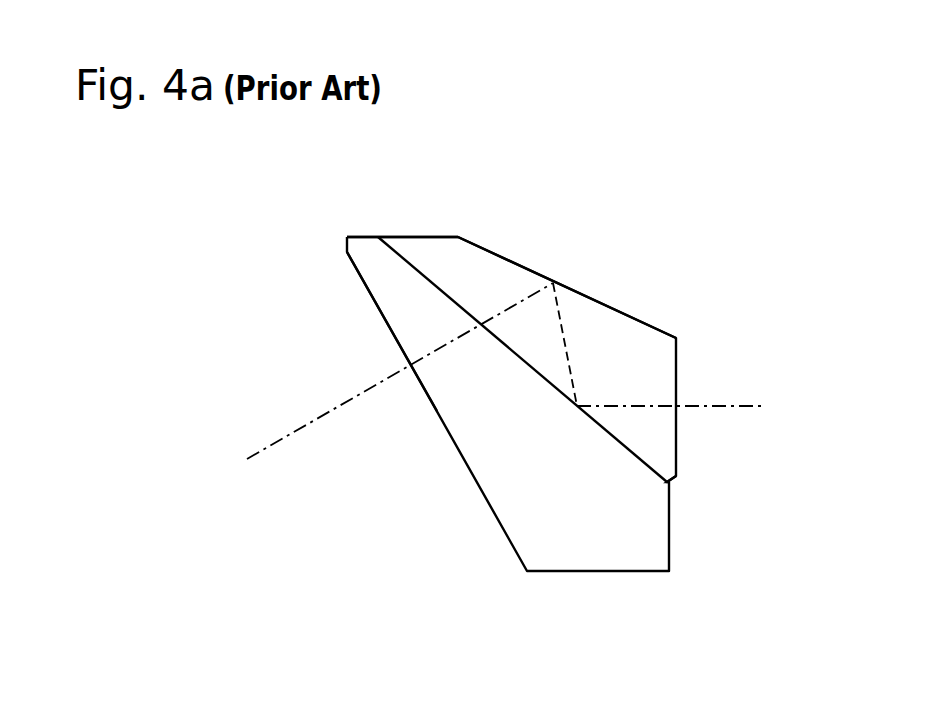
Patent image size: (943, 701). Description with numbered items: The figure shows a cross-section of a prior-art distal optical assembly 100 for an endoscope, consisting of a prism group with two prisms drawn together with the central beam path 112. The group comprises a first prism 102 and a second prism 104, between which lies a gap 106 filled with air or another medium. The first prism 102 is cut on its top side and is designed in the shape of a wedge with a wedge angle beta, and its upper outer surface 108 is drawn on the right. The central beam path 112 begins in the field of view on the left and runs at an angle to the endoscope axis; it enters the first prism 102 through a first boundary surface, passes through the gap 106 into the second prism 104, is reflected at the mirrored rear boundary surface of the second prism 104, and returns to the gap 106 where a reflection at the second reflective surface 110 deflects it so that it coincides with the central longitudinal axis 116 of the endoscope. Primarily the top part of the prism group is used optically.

The distal optical assembly 100 is at (664, 291).
The first prism 102 is at (365, 248).
The second prism 104 is at (443, 248).
The gap 106 is at (378, 237).
The second side surface 108 is at (507, 255).
The second reflective surface 110 is at (643, 462).
The central beam path 112 is at (268, 448).
The central longitudinal axis 116 is at (737, 406).